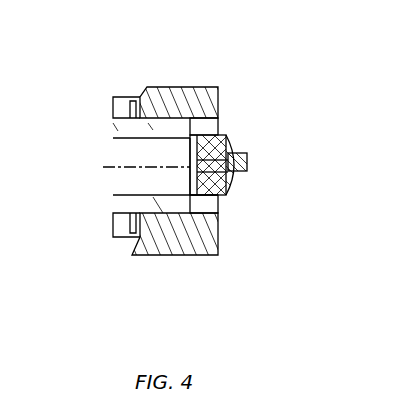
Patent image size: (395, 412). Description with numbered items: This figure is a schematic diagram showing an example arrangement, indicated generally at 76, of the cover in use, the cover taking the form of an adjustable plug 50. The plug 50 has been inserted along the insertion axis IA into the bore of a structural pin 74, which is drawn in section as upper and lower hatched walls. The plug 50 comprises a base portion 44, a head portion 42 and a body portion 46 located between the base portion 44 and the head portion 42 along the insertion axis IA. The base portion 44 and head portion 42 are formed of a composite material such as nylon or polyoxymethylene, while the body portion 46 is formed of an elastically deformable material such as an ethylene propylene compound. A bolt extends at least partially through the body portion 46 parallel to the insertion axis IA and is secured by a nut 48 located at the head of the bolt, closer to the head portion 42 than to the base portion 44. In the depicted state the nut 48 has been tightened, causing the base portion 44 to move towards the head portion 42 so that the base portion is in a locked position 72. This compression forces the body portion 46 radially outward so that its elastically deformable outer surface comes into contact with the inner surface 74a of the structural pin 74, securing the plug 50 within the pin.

The structural pin 74 is at (150, 130).
The inner surface 74a is at (128, 137).
The base portion 44 is at (188, 148).
The insertion axis IA is at (136, 170).
The head portion 42 is at (228, 136).
The locked position 72 is at (200, 152).
The adjustable plug 50 is at (246, 139).
The nut 48 is at (240, 168).
The body portion 46 is at (224, 186).
The arrangement of the plug in use 76 is at (305, 78).